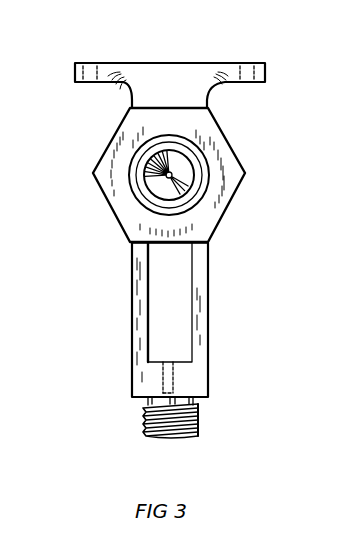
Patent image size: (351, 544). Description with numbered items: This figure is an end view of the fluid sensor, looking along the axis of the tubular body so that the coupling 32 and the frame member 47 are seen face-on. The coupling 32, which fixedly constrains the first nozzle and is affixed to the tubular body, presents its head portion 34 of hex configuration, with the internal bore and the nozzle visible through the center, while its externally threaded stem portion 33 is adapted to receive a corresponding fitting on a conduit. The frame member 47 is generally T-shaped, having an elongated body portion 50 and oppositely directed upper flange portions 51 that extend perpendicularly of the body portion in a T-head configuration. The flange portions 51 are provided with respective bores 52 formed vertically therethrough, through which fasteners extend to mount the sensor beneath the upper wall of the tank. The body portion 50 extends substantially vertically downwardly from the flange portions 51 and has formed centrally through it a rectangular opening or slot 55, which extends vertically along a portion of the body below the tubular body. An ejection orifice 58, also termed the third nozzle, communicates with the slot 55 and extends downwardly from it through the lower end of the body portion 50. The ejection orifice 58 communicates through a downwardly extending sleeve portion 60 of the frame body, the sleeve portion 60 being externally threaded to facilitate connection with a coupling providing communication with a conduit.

The coupling 32 is at (160, 175).
The stem portion 33 is at (199, 198).
The head portion 34 is at (224, 132).
The frame member 47 is at (190, 320).
The body portion 50 is at (218, 379).
The flange portions 51 is at (266, 70).
The bores 52 is at (241, 72).
The slot 55 is at (155, 286).
The ejection orifice 58 is at (172, 364).
The sleeve portion 60 is at (143, 418).